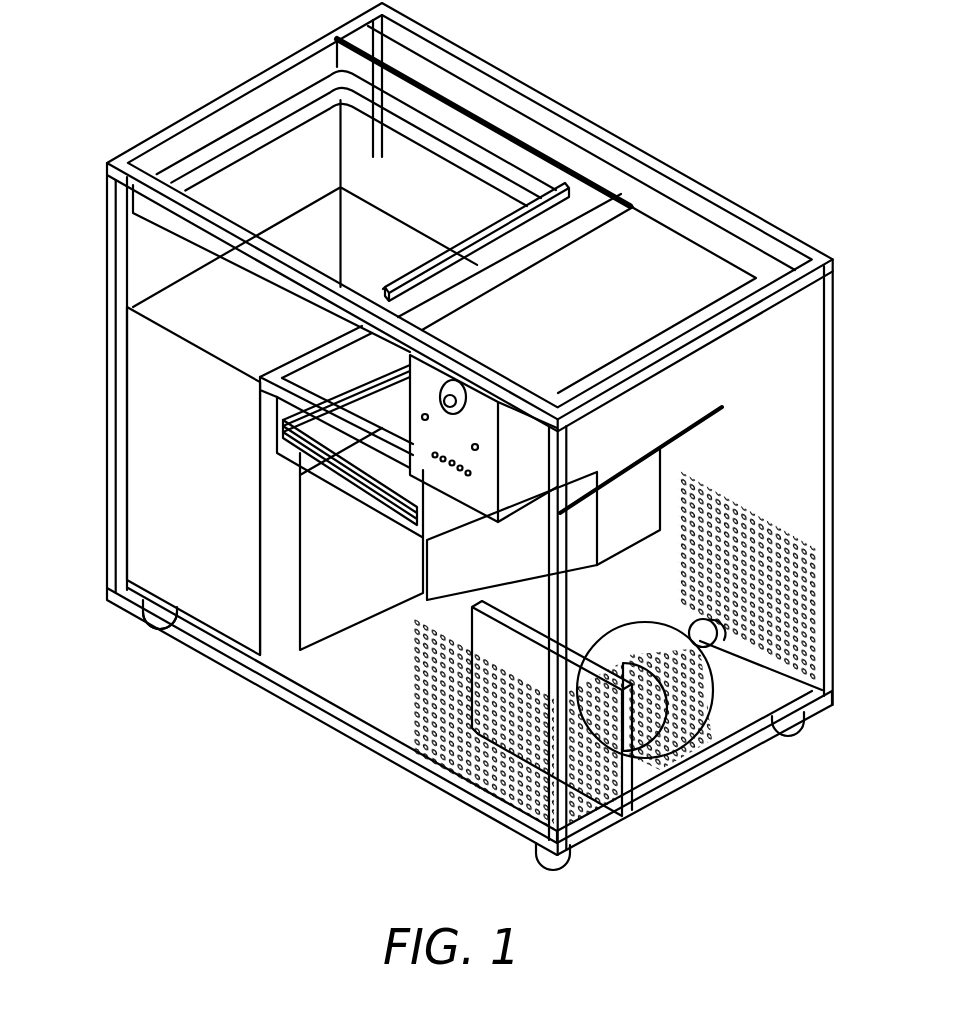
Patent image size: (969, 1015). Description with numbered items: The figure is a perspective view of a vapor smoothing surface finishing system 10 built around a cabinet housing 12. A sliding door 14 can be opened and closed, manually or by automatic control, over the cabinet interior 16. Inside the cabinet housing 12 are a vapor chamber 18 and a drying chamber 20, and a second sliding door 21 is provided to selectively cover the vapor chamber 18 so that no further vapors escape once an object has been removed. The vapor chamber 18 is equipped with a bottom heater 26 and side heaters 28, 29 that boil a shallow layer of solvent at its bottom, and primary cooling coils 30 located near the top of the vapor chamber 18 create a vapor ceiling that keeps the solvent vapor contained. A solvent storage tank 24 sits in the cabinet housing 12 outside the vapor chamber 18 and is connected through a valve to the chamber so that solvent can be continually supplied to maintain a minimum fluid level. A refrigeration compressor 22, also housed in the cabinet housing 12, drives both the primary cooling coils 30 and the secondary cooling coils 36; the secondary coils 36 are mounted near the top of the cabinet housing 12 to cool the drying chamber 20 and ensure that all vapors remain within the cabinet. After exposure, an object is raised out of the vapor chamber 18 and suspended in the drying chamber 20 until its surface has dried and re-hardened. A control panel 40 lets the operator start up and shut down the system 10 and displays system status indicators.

The vapor smoothing surface finishing system 10 is at (752, 162).
The cabinet housing 12 is at (833, 358).
The sliding door 14 is at (640, 205).
The cabinet interior 16 is at (298, 160).
The vapor chamber 18 is at (297, 642).
The drying chamber 20 is at (150, 372).
The sliding door 21 is at (272, 372).
The refrigeration compressor 22 is at (708, 730).
The solvent storage tank 24 is at (660, 467).
The bottom heater 26 is at (363, 692).
The side heater 28 is at (508, 556).
The side heater 29 is at (298, 505).
The primary cooling coils 30 is at (357, 477).
The secondary cooling coils 36 is at (437, 123).
The control panel 40 is at (490, 432).